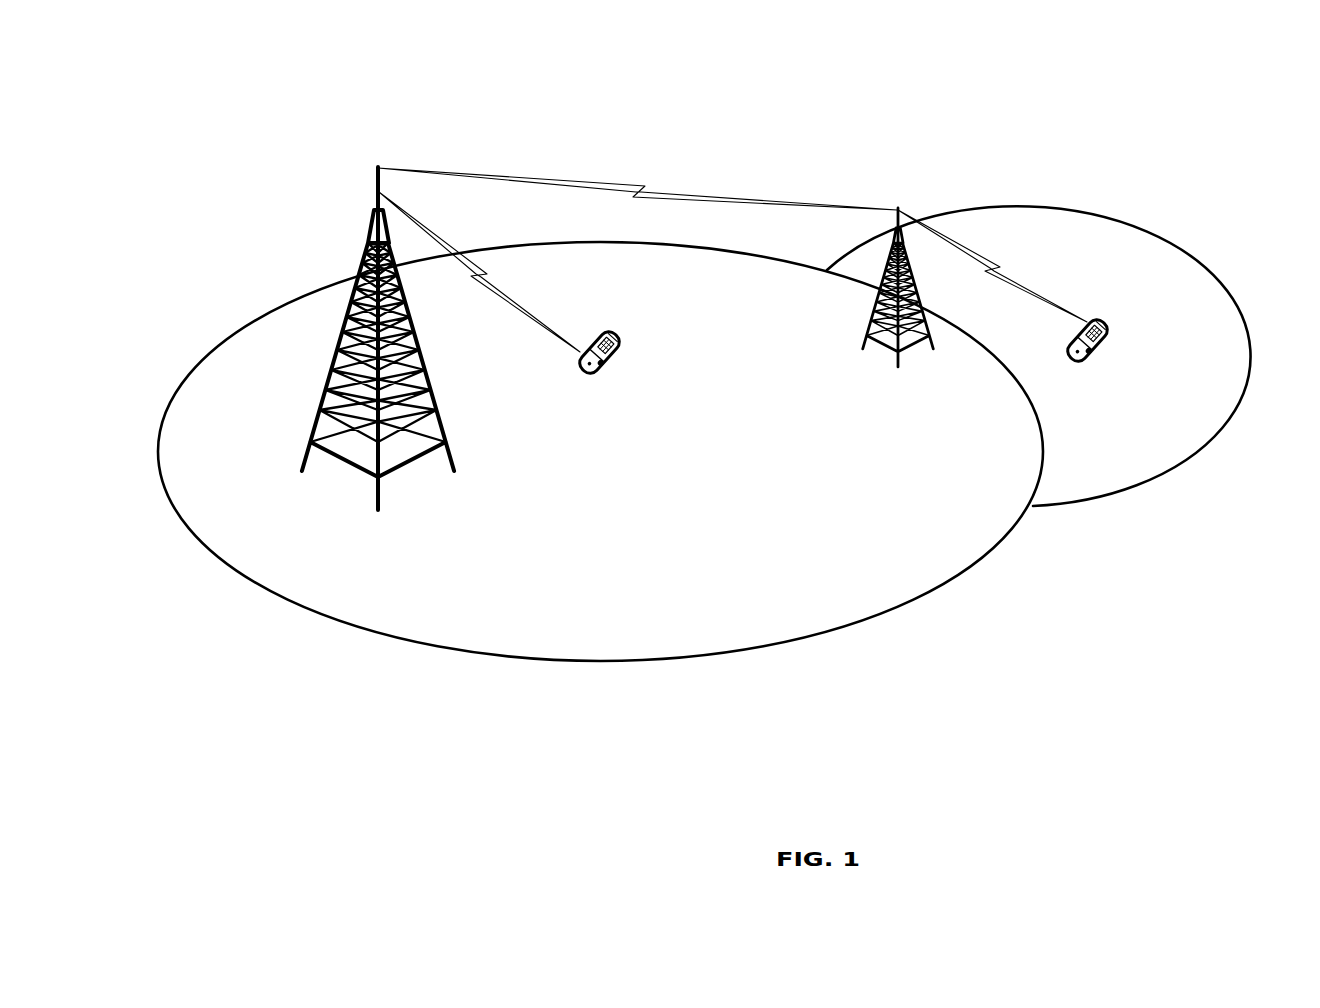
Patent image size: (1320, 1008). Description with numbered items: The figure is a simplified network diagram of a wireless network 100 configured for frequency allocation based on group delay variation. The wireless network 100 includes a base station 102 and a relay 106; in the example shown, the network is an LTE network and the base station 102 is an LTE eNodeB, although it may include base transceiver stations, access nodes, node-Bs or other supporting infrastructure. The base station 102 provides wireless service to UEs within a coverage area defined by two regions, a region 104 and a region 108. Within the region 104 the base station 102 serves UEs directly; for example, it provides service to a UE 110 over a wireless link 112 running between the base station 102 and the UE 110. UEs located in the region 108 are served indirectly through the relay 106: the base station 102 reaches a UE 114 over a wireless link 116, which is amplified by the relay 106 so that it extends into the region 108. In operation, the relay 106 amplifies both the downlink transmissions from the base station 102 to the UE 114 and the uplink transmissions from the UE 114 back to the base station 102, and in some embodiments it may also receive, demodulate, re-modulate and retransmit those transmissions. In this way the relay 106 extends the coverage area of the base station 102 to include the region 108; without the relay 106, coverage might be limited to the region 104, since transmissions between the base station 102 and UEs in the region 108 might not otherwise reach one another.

The wireless network 100 is at (575, 132).
The base station 102 is at (325, 394).
The region 104 is at (318, 292).
The relay 106 is at (862, 327).
The region 108 is at (1178, 240).
The UE 110 is at (617, 326).
The wireless link 112 is at (528, 303).
The UE 114 is at (1104, 318).
The wireless link 116 is at (710, 198).